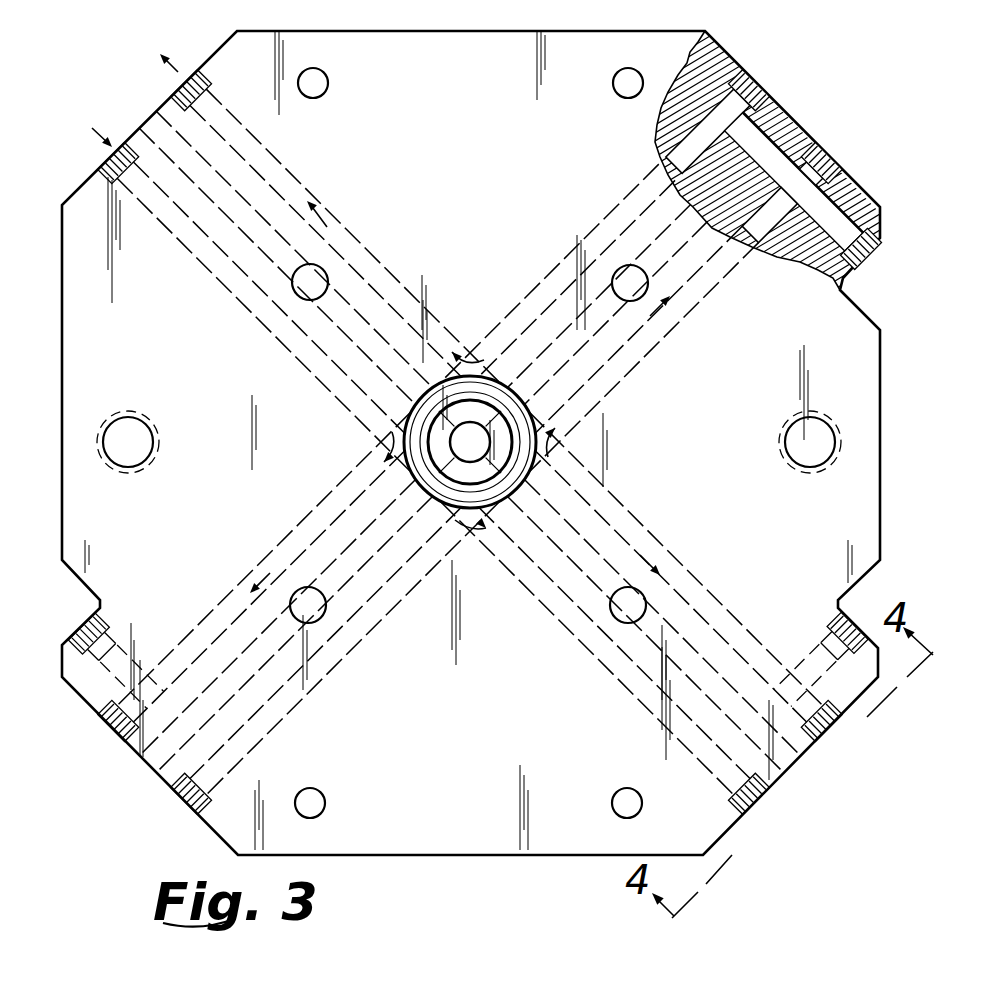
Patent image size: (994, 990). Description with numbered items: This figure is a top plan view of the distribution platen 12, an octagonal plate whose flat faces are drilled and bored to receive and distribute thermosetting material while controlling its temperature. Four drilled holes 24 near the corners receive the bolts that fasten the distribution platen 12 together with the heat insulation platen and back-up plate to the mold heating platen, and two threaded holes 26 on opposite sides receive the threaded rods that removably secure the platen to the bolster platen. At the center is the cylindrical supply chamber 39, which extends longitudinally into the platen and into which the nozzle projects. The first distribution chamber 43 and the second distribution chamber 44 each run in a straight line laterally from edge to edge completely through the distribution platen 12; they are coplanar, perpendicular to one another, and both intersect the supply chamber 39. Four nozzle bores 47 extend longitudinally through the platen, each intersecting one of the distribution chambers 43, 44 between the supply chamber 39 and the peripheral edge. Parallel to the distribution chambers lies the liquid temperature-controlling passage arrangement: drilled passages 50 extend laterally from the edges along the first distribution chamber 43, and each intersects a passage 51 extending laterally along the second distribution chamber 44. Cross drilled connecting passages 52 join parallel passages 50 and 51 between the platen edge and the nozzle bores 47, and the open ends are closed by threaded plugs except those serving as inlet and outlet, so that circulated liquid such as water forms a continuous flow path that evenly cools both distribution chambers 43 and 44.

The distribution platen 12 is at (498, 42).
The drilled holes 24 is at (329, 82).
The threaded holes 26 is at (153, 437).
The supply chamber 39 is at (447, 462).
The first distribution chamber 43 is at (336, 383).
The second distribution chamber 44 is at (352, 545).
The nozzle bores 47 is at (322, 274).
The drilled passages 50 is at (318, 178).
The passage 51 is at (636, 195).
The cross drilled connecting passages 52 is at (830, 248).